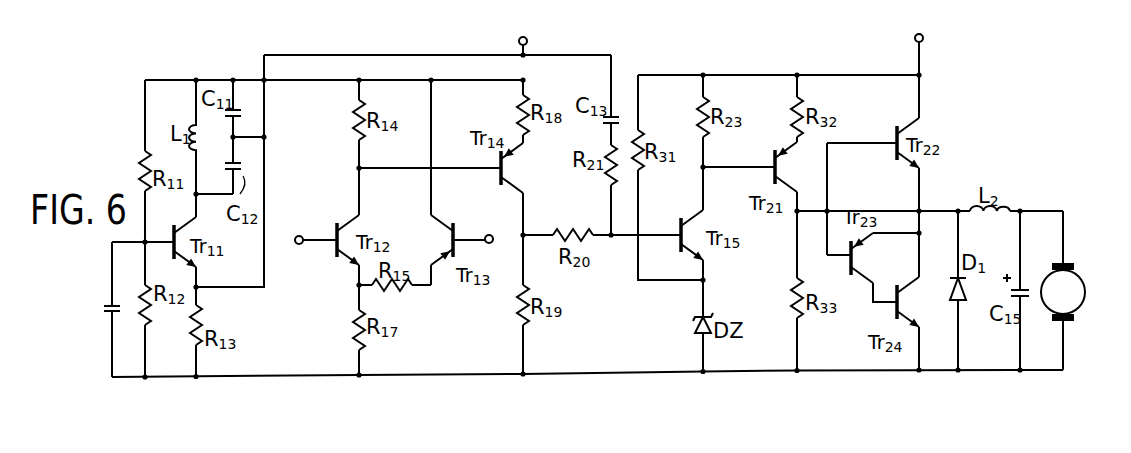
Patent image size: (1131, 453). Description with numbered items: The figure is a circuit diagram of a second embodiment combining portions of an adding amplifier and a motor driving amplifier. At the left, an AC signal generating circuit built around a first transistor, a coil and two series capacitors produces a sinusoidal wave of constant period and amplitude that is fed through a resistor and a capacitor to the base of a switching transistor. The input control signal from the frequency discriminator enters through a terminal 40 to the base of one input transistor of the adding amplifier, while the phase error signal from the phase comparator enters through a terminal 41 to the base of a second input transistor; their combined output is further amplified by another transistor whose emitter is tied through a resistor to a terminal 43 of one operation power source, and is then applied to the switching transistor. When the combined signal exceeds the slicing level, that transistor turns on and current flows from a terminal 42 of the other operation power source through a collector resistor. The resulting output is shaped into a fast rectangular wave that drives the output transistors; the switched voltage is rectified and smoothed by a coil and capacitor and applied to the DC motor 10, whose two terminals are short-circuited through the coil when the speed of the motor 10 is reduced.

The DC motor 10 is at (1081, 277).
The terminal 40 is at (299, 236).
The terminal 41 is at (491, 234).
The terminal of operation power source VB1 42 is at (923, 36).
The terminal of operation power source VB2 43 is at (527, 39).